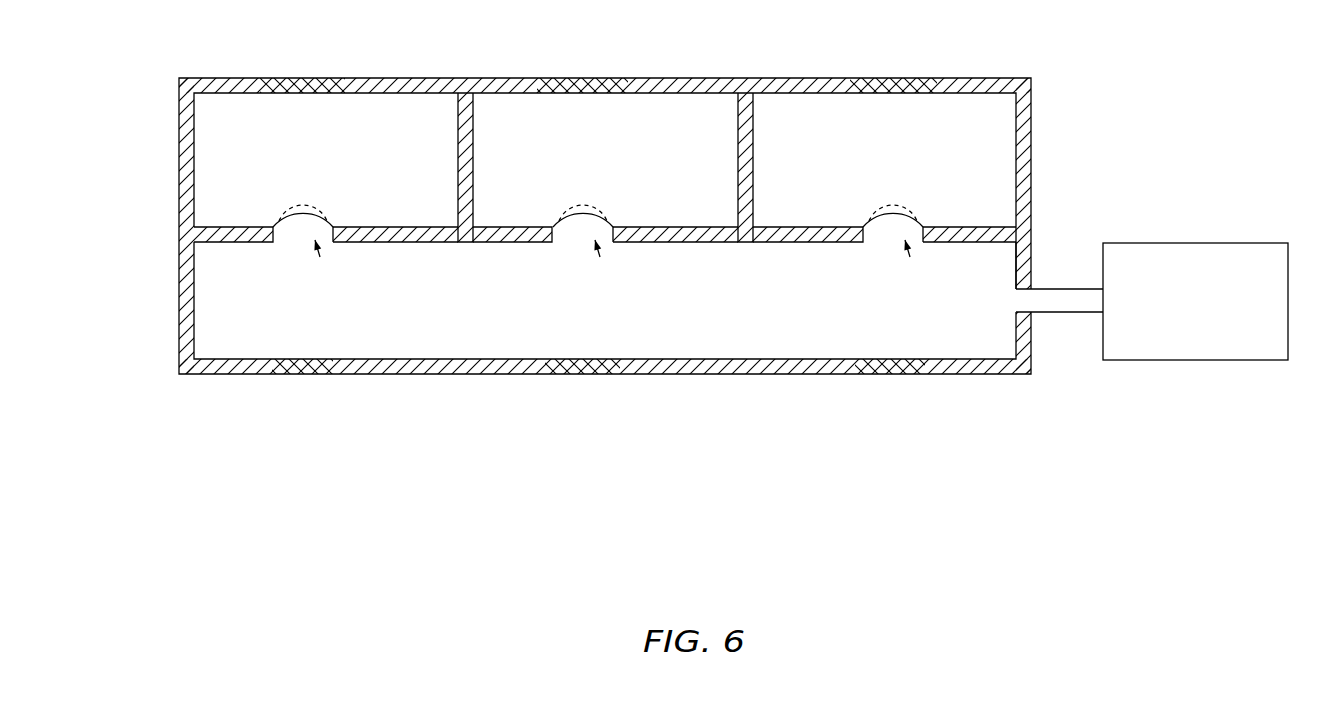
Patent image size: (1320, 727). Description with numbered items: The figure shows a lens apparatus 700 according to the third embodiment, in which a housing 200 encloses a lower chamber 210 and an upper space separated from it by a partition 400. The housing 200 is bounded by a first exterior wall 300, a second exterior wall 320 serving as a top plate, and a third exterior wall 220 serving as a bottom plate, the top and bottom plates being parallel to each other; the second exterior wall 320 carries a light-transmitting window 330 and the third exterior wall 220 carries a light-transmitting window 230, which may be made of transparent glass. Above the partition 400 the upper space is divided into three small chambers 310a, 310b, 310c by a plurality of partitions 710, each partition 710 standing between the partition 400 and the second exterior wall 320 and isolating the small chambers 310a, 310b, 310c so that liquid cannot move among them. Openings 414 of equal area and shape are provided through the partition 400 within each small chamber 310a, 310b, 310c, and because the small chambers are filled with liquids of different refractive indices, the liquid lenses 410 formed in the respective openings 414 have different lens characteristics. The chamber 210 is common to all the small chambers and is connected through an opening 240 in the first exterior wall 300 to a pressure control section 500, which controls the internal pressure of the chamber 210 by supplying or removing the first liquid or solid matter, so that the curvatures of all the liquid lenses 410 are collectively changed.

The housing 200 is at (178, 308).
The chamber 210 is at (253, 347).
The third exterior wall 220 is at (212, 375).
The window 230 is at (315, 375).
The opening 240 is at (1023, 300).
The first exterior wall 300 is at (178, 160).
The small chamber 310a is at (267, 139).
The small chamber 310b is at (547, 139).
The small chamber 310c is at (827, 139).
The second exterior wall 320 is at (229, 77).
The window 330 is at (315, 77).
The partition 400 is at (242, 243).
The liquid lens 410 is at (317, 209).
The opening 414 is at (320, 257).
The pressure control section 500 is at (1200, 361).
The lens apparatus 700 is at (715, 534).
The partition 710 is at (457, 192).